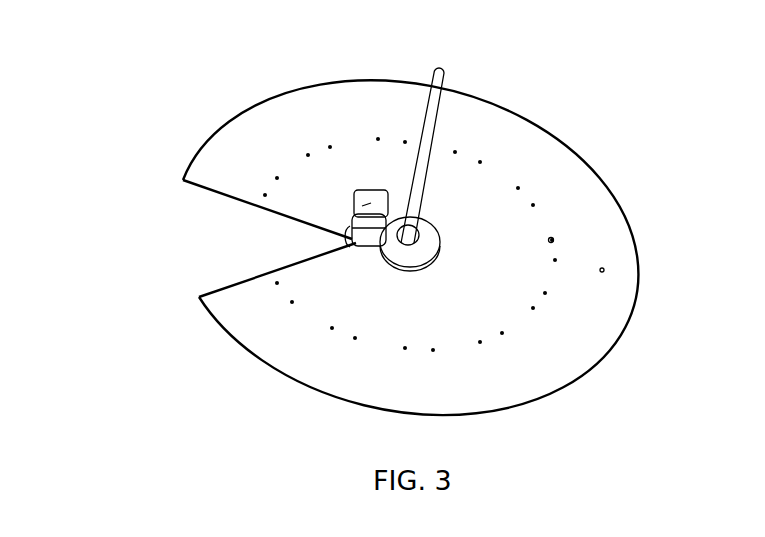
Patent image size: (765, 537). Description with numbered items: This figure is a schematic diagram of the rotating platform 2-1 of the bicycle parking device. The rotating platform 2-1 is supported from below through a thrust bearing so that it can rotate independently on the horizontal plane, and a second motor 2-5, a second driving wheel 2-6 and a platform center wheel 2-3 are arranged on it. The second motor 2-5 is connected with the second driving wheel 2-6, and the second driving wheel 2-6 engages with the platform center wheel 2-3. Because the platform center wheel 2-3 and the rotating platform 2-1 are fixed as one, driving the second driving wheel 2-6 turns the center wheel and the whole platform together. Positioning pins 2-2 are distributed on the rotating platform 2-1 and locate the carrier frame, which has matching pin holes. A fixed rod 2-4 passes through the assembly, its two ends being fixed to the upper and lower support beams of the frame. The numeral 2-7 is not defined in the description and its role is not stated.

The disc with sector notch 2-7 is at (227, 223).
The rotating platform 2-1 is at (446, 75).
The positioning pin 2-2 is at (420, 240).
The platform center wheel 2-3 is at (551, 239).
The fixed rod 2-4 is at (602, 270).
The second motor 2-5 is at (355, 212).
The second driving wheel 2-6 is at (350, 247).